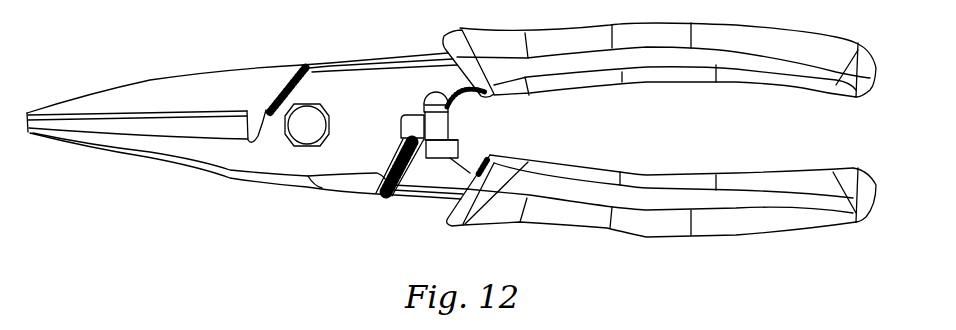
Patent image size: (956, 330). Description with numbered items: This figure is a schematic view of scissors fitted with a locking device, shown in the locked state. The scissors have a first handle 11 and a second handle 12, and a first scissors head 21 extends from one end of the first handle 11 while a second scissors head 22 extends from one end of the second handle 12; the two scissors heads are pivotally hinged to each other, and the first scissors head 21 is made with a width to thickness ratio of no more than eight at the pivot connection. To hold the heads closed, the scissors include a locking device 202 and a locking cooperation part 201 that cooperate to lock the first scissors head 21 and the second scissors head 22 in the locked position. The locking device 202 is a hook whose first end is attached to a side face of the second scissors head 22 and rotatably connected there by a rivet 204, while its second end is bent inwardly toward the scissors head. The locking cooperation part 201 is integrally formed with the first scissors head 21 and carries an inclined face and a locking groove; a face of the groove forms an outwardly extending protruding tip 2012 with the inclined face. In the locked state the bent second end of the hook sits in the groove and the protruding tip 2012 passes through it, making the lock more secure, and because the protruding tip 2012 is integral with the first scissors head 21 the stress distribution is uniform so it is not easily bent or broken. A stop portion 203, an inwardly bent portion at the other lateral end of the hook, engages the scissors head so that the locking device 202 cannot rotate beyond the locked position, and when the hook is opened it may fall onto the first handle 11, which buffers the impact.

The first handle 11 is at (557, 215).
The second handle 12 is at (557, 43).
The first scissors head 21 is at (180, 90).
The second scissors head 22 is at (220, 152).
The locking cooperation part 201 is at (443, 163).
The locking device 202 is at (435, 130).
The stop portion 203 is at (453, 125).
The rivet 204 is at (440, 128).
The protruding tip 2012 is at (448, 142).